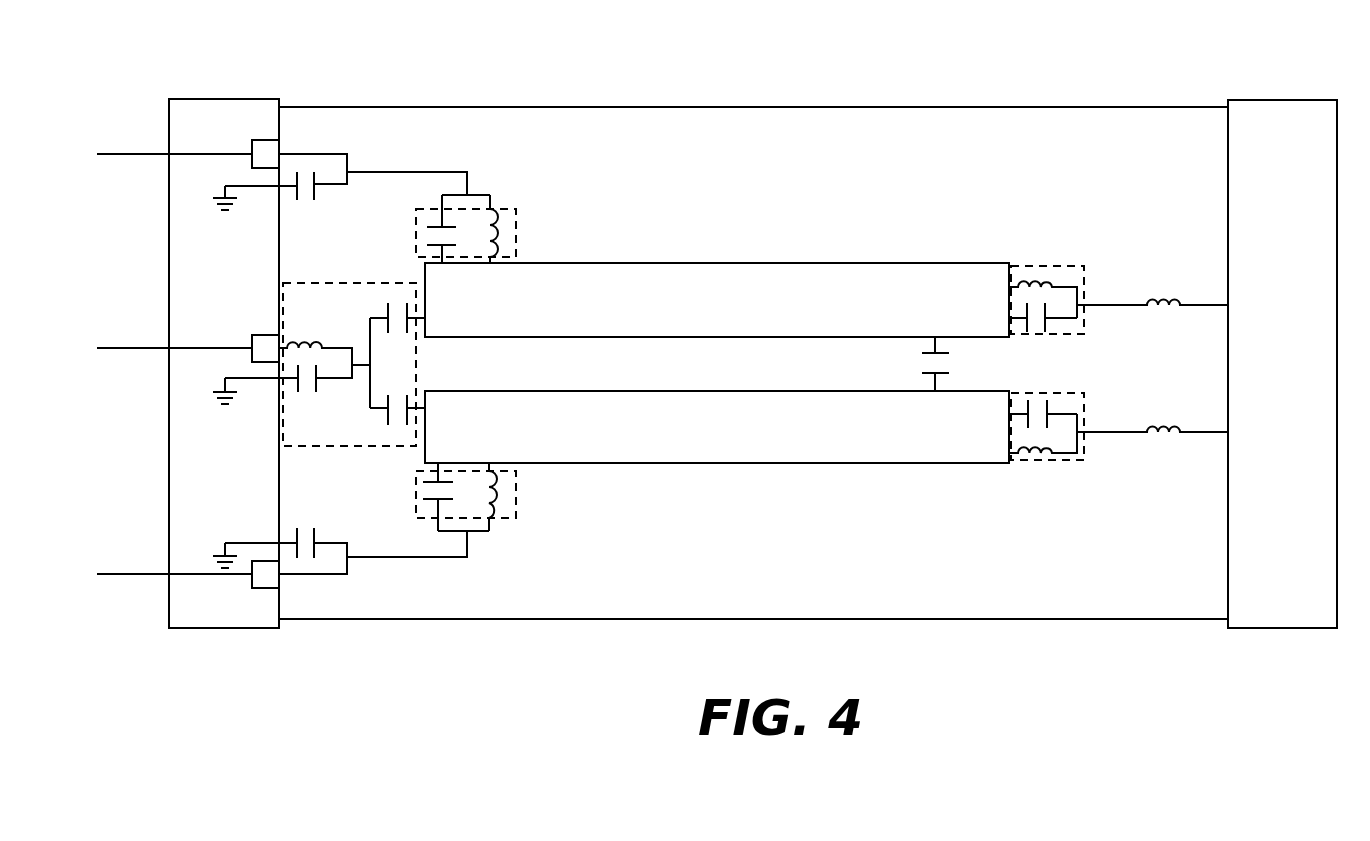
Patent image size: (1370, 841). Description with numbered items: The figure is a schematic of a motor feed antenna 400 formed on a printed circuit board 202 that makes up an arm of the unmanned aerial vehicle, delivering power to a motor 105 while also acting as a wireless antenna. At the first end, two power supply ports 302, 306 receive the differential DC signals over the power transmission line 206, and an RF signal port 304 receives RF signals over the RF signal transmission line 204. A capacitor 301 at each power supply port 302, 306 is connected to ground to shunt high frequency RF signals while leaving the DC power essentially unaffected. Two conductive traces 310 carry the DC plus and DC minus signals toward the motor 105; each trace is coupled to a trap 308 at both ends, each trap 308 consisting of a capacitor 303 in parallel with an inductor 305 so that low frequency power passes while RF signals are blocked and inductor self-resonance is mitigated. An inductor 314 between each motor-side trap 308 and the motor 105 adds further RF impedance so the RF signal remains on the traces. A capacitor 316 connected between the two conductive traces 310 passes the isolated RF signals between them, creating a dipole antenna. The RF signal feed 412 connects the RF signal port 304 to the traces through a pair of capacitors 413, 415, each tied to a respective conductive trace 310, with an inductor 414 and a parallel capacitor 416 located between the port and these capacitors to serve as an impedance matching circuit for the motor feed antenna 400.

The motor feed antenna 400 is at (737, 212).
The printed circuit board 202 is at (1073, 130).
The motor 105 is at (1282, 100).
The power transmission line 206 is at (143, 156).
The RF signal transmission line 204 is at (143, 350).
The power supply port 302 is at (265, 140).
The RF signal port 304 is at (268, 335).
The power supply port 306 is at (270, 590).
The capacitor 301 is at (318, 192).
The capacitor 303 is at (437, 222).
The inductor 305 is at (505, 232).
The trap 308 is at (507, 208).
The conductive trace 310 is at (857, 262).
The capacitor 316 is at (924, 353).
The inductor 314 is at (1166, 292).
The RF signal feed 412 is at (332, 283).
The capacitor 413 is at (388, 312).
The inductor 414 is at (290, 338).
The capacitor 415 is at (390, 400).
The capacitor 416 is at (318, 390).